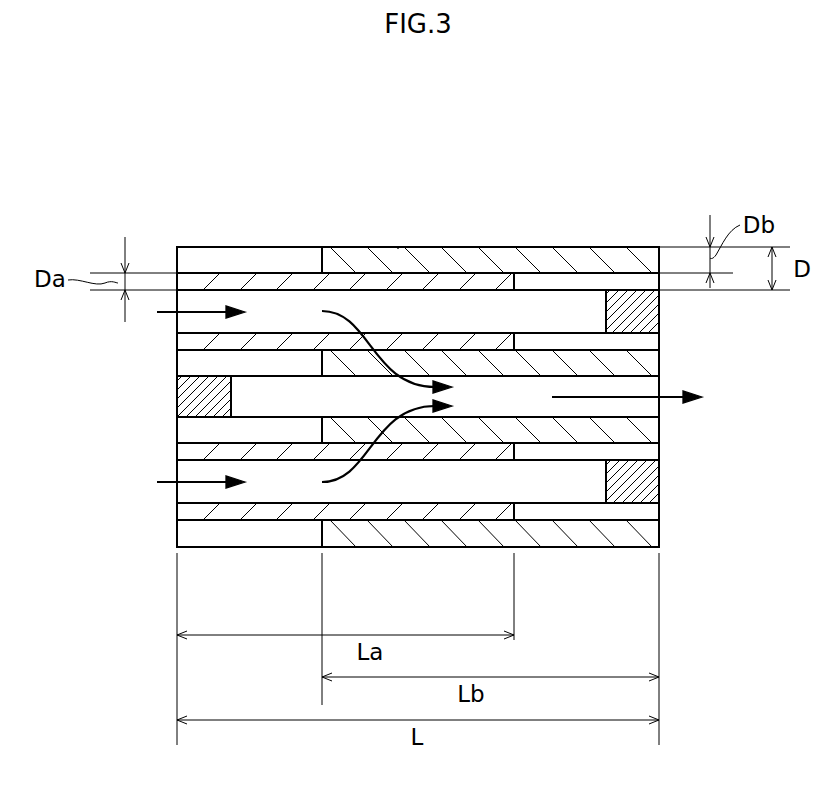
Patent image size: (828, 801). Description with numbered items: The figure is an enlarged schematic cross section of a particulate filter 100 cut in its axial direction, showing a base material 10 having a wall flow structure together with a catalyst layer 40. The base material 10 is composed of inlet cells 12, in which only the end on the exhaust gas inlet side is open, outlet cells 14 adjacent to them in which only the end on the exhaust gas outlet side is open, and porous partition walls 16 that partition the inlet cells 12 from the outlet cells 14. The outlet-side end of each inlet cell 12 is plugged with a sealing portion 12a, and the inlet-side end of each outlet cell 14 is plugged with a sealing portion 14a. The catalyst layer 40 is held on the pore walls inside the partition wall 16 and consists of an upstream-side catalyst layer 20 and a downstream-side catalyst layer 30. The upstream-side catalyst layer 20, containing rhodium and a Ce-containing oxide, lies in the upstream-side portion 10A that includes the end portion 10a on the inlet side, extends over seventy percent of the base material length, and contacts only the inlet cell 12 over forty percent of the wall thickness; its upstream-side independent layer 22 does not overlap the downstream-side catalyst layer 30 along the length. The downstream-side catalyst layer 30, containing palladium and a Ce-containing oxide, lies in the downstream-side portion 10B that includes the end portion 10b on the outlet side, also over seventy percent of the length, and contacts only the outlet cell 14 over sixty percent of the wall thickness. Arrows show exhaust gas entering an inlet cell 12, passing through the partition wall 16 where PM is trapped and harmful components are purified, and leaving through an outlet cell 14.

The particulate filter 100 is at (690, 148).
The base material 10 is at (581, 221).
The end portion on the exhaust gas inlet side 10a is at (177, 262).
The end portion on the exhaust gas outlet side 10b is at (660, 261).
The upstream-side portion 10A is at (296, 301).
The downstream-side portion 10B is at (536, 245).
The inlet cell 12 is at (376, 312).
The sealing portion 12a is at (655, 318).
The outlet cell 14 is at (535, 405).
The sealing portion 14a is at (177, 395).
The partition wall 16 is at (453, 330).
The upstream-side catalyst layer 20 is at (203, 282).
The upstream-side independent layer 22 is at (262, 340).
The downstream-side catalyst layer 30 is at (638, 257).
The catalyst layer 40 is at (488, 245).